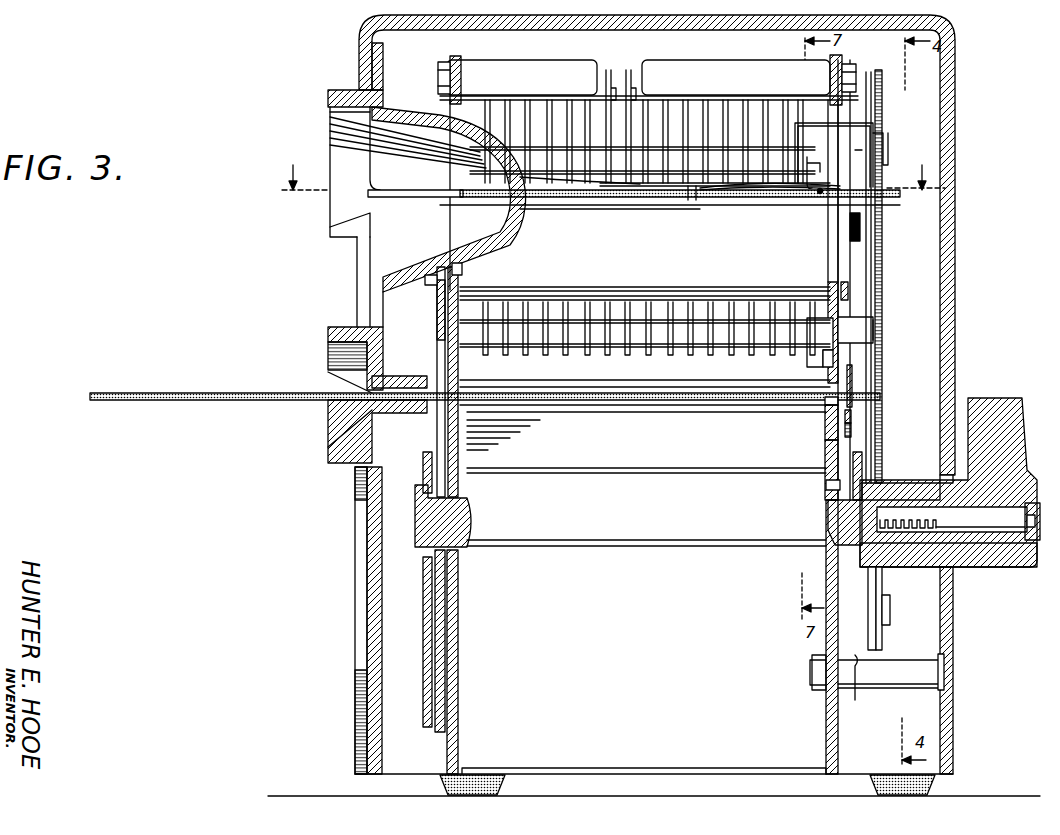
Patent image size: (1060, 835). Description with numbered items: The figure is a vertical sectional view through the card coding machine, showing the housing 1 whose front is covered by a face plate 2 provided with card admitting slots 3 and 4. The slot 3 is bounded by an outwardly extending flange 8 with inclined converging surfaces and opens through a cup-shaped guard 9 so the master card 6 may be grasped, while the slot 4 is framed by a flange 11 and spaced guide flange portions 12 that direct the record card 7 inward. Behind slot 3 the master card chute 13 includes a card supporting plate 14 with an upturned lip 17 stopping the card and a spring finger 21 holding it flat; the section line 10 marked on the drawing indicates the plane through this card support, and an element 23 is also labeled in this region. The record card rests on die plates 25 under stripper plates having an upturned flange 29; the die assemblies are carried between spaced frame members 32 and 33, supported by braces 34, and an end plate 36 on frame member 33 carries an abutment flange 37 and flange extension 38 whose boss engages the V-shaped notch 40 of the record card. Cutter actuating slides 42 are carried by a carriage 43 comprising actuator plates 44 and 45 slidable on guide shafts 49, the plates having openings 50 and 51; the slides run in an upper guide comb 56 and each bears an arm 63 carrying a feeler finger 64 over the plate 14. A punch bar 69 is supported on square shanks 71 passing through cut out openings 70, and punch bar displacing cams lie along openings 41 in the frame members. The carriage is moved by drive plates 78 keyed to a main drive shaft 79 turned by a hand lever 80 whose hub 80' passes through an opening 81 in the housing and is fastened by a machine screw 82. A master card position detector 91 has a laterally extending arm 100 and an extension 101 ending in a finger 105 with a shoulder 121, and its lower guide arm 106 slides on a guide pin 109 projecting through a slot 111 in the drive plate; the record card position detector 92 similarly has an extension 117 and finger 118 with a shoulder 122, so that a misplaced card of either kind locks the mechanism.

The housing 1 is at (955, 170).
The face plate 2 is at (362, 664).
The card admitting slot 3 is at (420, 191).
The card admitting slot 4 is at (410, 392).
The master card 6 is at (548, 205).
The record card 7 is at (215, 393).
The outwardly extending flange 8 is at (333, 90).
The cup-shaped guard 9 is at (500, 237).
The section line 10 is at (613, 167).
The outwardly extending flange 11 is at (330, 328).
The guide flange portions 12 is at (395, 415).
The master card chute 13 is at (622, 203).
The card supporting plate 14 is at (692, 200).
The lip 17 is at (819, 196).
The spring finger 21 is at (740, 200).
The plate 23 is at (583, 210).
The die plates 25 is at (525, 408).
The upturned flange 29 is at (567, 390).
The frame member 32 is at (467, 465).
The frame member 33 is at (826, 481).
The braces 34 is at (648, 475).
The end plate 36 is at (822, 450).
The abutment flange 37 is at (852, 366).
The flange extension 38 is at (823, 415).
The V-shaped notch 40 is at (828, 269).
The openings 41 is at (458, 371).
The cutter actuating slides 42 is at (530, 125).
The carriage 43 is at (436, 318).
The actuator plate 44 is at (852, 421).
The actuator plate 45 is at (450, 590).
The guide shafts 49 is at (860, 150).
The opening 50 is at (430, 282).
The opening 51 is at (425, 402).
The upper guide comb 56 is at (652, 180).
The arm 63 is at (612, 90).
The feeler fingers 64 is at (505, 120).
The punch bar 69 is at (731, 262).
The cut out openings 70 is at (462, 271).
The square shanks 71 is at (860, 230).
The drive plates 78 is at (422, 708).
The main drive shaft 79 is at (672, 532).
The hand lever 80 is at (932, 458).
The hub 80' is at (948, 576).
The opening 81 is at (936, 480).
The machine screw 82 is at (1028, 545).
The master card position detector 91 is at (873, 72).
The record card position detector 92 is at (882, 108).
The laterally extending arm 100 is at (888, 133).
The extension 101 is at (810, 110).
The finger 105 is at (800, 192).
The guide arm 106 is at (868, 471).
The guide pin 109 is at (890, 620).
The slot 111 is at (870, 660).
The extension 117 is at (866, 325).
The finger 118 is at (815, 378).
The shoulder 121 is at (805, 160).
The shoulder 122 is at (815, 368).